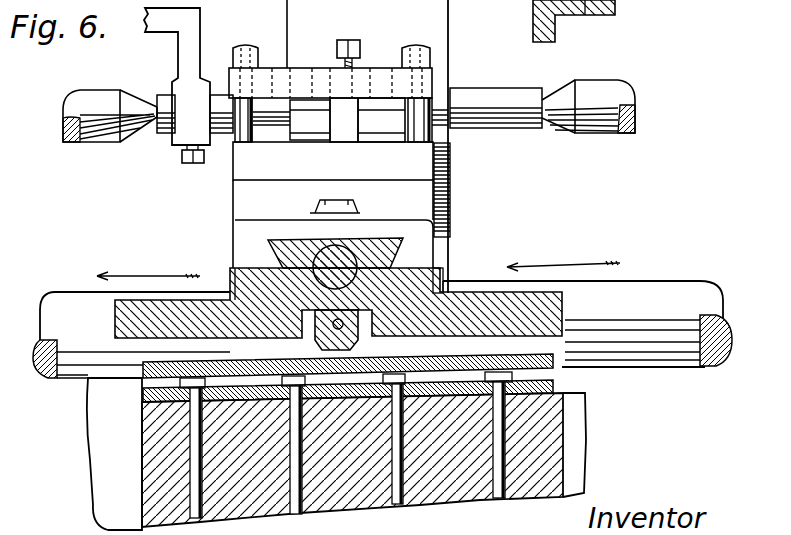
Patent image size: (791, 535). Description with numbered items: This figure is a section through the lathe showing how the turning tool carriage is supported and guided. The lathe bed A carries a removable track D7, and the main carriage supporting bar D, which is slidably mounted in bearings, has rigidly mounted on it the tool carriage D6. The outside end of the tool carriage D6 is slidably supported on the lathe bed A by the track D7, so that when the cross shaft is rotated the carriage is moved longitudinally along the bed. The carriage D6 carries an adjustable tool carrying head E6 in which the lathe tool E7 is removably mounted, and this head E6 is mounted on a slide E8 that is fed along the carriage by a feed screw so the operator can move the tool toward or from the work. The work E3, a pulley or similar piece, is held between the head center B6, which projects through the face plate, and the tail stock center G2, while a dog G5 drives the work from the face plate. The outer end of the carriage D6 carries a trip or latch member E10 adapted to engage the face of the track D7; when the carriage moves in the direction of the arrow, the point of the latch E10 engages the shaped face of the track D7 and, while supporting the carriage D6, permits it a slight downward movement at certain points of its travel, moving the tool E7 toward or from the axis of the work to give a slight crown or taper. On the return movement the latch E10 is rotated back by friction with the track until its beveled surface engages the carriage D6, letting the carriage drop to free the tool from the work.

The lathe bed A is at (112, 478).
The center B6 is at (97, 100).
The main carriage supporting bar D is at (70, 298).
The tool carriage D6 is at (230, 272).
The removable track D7 is at (145, 398).
The work E3 is at (430, 32).
The adjustable tool carrying head E6 is at (286, 170).
The lathe tool E7 is at (347, 125).
The slide E8 is at (247, 233).
The trip or latch member E10 is at (358, 328).
The tail stock center G2 is at (602, 90).
The dog G5 is at (193, 45).